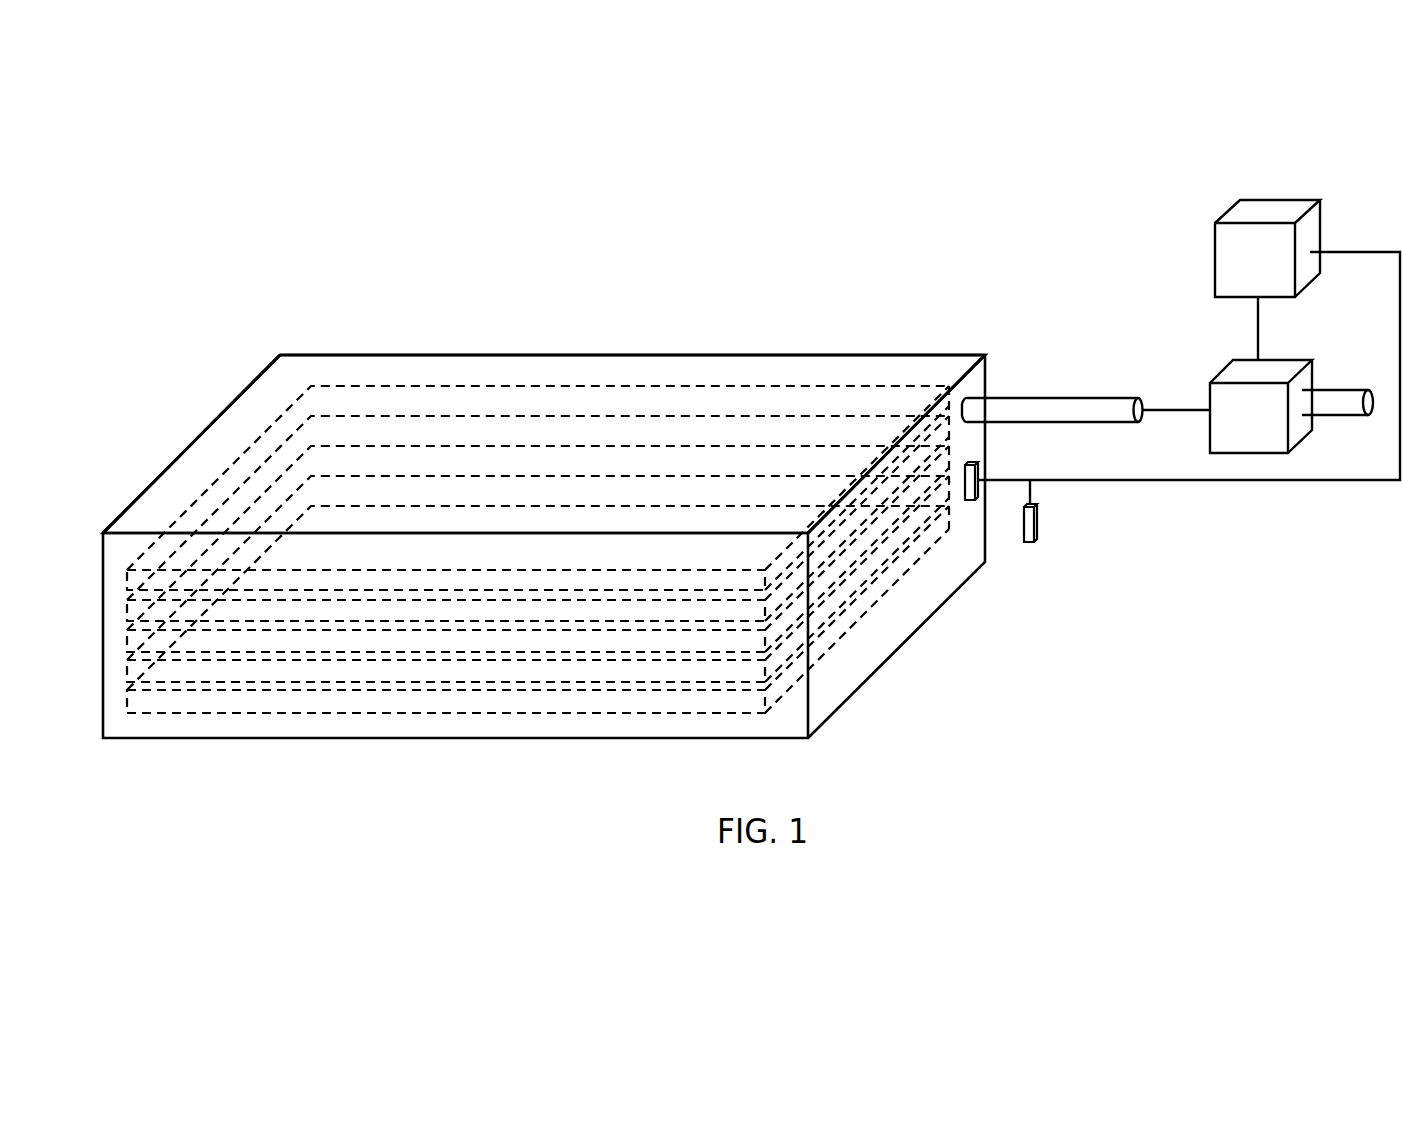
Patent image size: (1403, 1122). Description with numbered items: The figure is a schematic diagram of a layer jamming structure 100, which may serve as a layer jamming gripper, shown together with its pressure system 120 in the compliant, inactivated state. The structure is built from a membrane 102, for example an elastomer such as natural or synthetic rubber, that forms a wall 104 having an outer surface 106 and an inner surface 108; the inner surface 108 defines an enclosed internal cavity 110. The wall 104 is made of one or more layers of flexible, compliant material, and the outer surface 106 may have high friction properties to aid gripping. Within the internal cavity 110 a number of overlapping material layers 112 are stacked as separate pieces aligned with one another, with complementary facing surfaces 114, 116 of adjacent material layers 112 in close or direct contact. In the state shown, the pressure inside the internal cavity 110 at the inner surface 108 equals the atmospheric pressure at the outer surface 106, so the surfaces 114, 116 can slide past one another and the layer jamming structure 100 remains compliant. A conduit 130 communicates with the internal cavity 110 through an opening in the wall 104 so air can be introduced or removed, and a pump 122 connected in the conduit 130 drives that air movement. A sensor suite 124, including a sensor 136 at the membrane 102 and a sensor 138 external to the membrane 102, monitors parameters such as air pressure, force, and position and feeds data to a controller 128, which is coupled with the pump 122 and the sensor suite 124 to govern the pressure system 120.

The layer jamming structure 100 is at (660, 340).
The membrane 102 is at (402, 355).
The wall 104 is at (530, 365).
The outer surface 106 is at (282, 388).
The inner surface 108 is at (262, 400).
The internal cavity 110 is at (810, 370).
The material layers 112 is at (875, 447).
The surface 114 is at (882, 542).
The surface 116 is at (866, 556).
The pressure system 120 is at (1125, 245).
The pump 122 is at (1268, 430).
The sensor suite 124 is at (1040, 573).
The controller 128 is at (1275, 273).
The conduit 130 is at (1075, 405).
The sensor 136 is at (977, 477).
The sensor 138 is at (1037, 522).